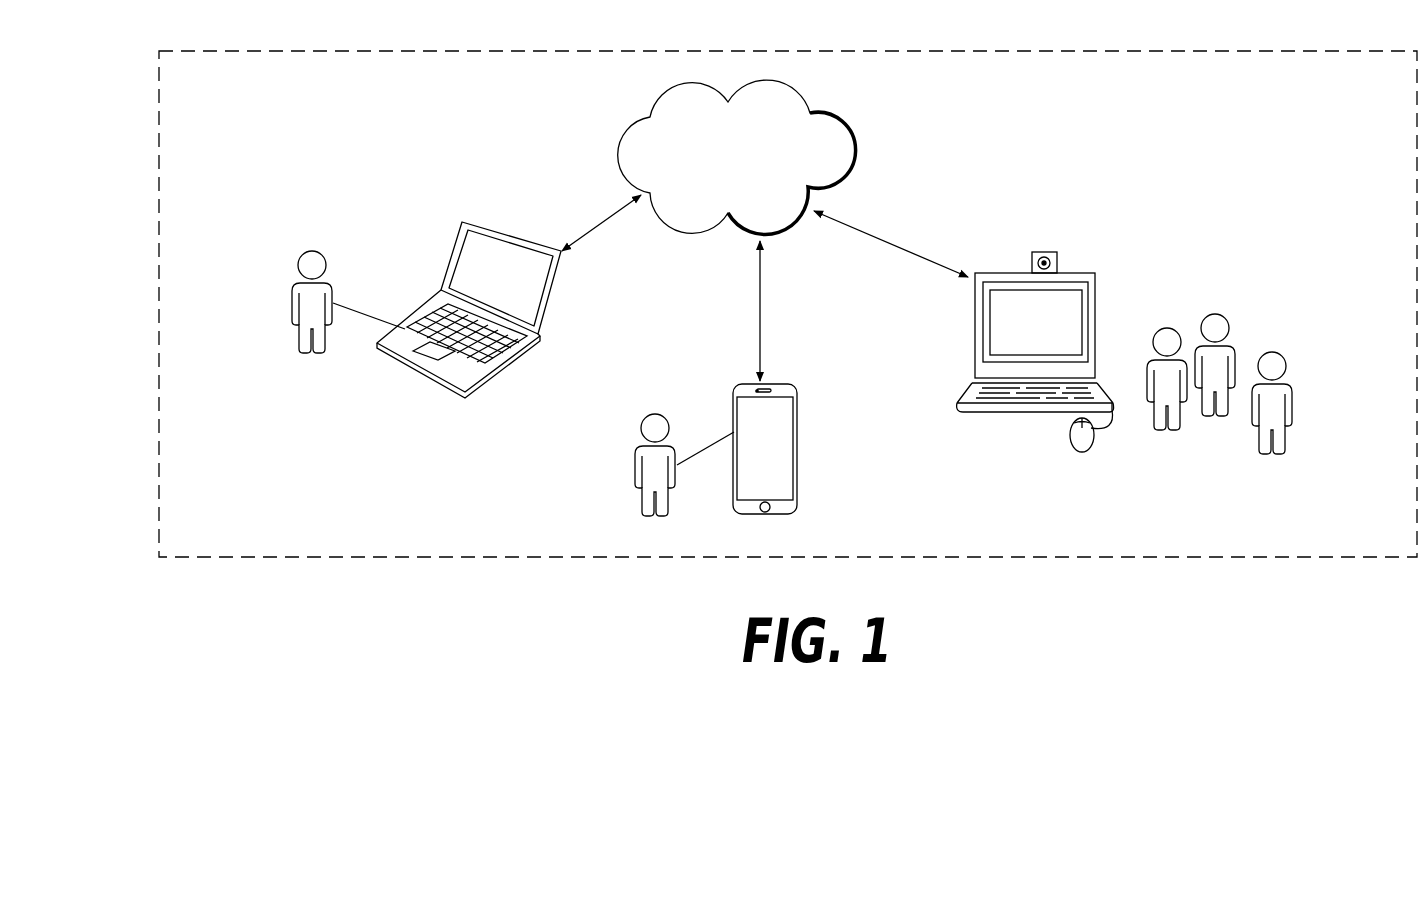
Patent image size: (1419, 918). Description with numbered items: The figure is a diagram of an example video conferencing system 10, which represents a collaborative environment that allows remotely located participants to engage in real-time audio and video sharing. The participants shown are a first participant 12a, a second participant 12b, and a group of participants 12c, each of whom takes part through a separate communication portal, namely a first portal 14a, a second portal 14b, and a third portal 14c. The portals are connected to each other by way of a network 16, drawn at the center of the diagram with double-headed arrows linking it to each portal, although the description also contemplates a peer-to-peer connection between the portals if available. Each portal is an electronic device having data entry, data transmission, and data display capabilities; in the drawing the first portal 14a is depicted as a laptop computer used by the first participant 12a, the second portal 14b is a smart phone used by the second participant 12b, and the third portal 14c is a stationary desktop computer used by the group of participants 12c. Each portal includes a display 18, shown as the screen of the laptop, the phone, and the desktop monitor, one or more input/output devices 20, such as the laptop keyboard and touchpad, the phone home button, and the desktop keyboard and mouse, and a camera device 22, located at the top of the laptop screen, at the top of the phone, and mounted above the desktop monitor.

The conferencing system 10 is at (1123, 147).
The first participant 12a is at (293, 305).
The second participant 12b is at (636, 462).
The group of participants 12c is at (1172, 431).
The first portal 14a is at (527, 303).
The second portal 14b is at (797, 463).
The third portal 14c is at (1097, 282).
The network 16 is at (723, 184).
The display 18 is at (488, 286).
The input/output device 20 is at (442, 358).
The camera device 22 is at (508, 240).